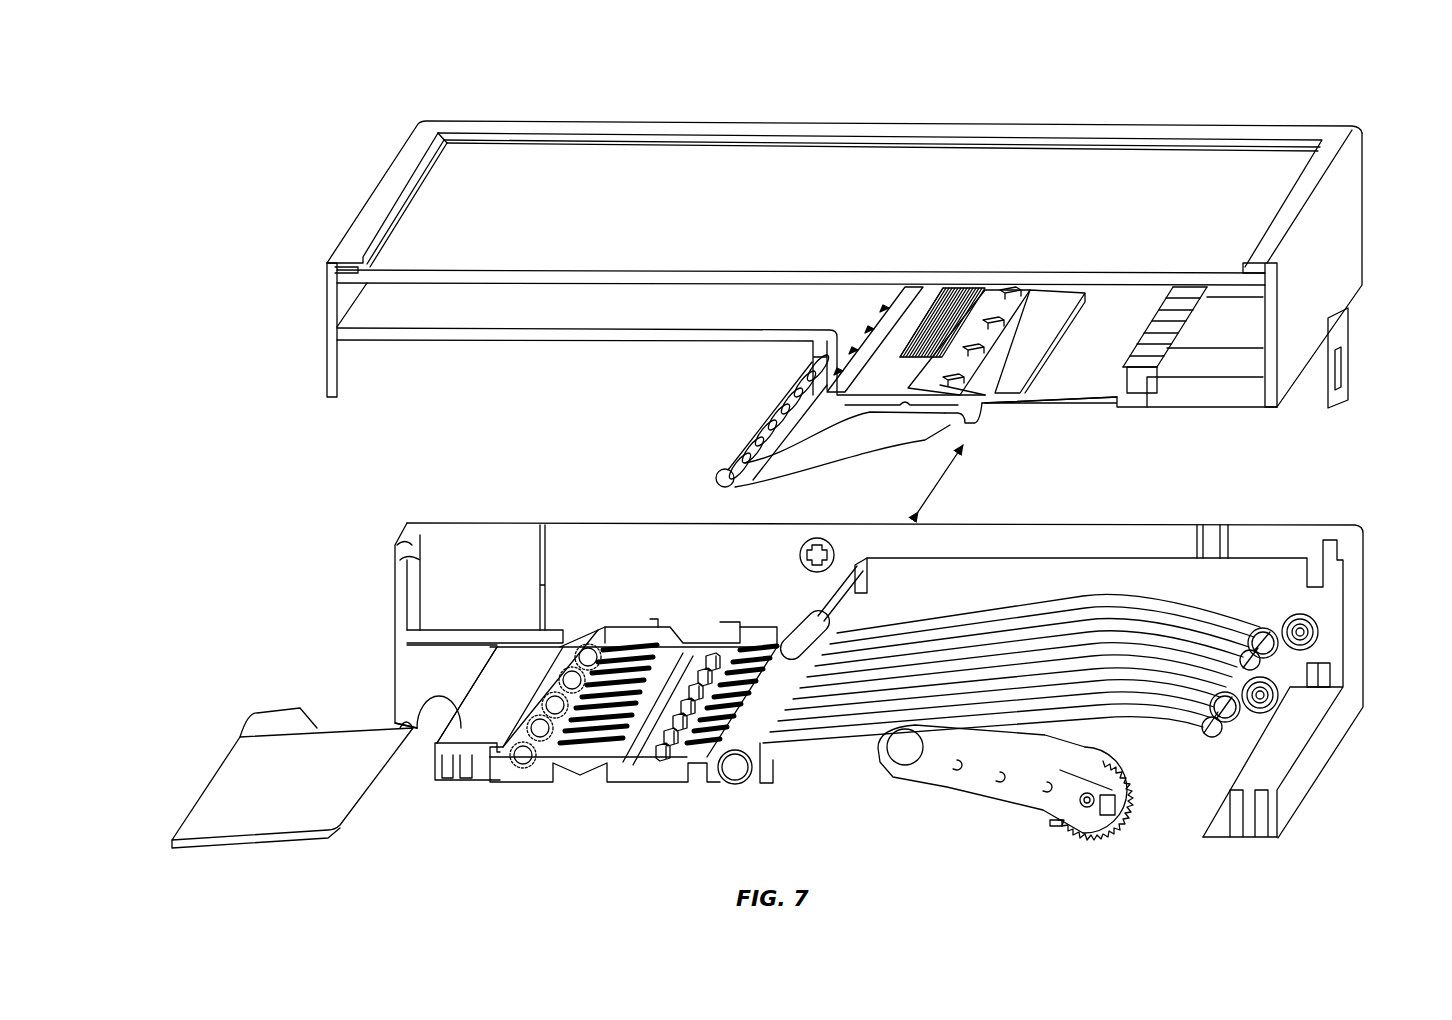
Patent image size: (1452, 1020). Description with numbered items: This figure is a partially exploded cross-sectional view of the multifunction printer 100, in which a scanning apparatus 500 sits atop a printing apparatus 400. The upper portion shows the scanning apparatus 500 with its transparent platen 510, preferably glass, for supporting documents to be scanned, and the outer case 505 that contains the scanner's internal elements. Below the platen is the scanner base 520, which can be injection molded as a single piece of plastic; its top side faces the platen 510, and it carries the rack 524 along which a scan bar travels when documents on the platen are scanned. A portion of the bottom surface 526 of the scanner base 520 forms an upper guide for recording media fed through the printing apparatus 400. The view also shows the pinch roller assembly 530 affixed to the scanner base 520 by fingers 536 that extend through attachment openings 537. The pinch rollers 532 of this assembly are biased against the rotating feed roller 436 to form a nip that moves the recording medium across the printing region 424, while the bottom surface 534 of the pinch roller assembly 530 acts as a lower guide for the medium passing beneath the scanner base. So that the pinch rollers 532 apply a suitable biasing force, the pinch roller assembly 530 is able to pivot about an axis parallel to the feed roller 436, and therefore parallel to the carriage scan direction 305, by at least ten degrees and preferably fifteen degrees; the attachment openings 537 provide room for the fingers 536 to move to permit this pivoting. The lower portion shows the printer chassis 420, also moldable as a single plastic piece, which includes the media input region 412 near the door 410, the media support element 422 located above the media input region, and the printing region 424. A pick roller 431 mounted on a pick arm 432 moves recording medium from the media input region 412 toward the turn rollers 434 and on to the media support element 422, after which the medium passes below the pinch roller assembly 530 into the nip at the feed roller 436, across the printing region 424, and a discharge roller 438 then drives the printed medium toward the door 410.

The multifunction printer 100 is at (213, 137).
The scanning apparatus 500 is at (303, 262).
The outer case 505 is at (1347, 237).
The transparent platen 510 is at (450, 190).
The scanner base 520 is at (463, 335).
The rack 524 is at (940, 297).
The bottom surface 526 is at (1087, 407).
The pinch roller assembly 530 is at (958, 430).
The pinch rollers 532 is at (717, 473).
The bottom surface 534 is at (860, 458).
The fingers 536 is at (1030, 285).
The attachment openings 537 is at (1007, 290).
The carriage scan direction 305 is at (940, 490).
The printing apparatus 400 is at (320, 593).
The door 410 is at (227, 790).
The media input region 412 is at (460, 808).
The printer chassis 420 is at (1363, 583).
The media support element 422 is at (1137, 608).
The printing region 424 is at (648, 790).
The pick roller 431 is at (1135, 773).
The pick arm 432 is at (993, 793).
The turn rollers 434 is at (1247, 720).
The feed roller 436 is at (732, 783).
The discharge roller 438 is at (522, 763).